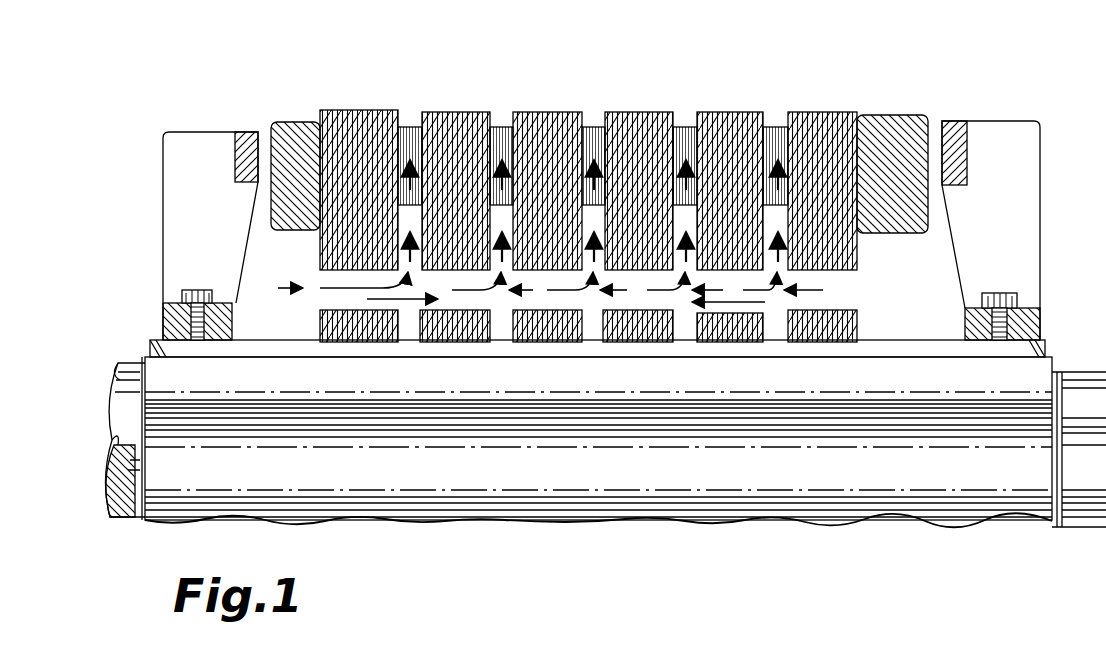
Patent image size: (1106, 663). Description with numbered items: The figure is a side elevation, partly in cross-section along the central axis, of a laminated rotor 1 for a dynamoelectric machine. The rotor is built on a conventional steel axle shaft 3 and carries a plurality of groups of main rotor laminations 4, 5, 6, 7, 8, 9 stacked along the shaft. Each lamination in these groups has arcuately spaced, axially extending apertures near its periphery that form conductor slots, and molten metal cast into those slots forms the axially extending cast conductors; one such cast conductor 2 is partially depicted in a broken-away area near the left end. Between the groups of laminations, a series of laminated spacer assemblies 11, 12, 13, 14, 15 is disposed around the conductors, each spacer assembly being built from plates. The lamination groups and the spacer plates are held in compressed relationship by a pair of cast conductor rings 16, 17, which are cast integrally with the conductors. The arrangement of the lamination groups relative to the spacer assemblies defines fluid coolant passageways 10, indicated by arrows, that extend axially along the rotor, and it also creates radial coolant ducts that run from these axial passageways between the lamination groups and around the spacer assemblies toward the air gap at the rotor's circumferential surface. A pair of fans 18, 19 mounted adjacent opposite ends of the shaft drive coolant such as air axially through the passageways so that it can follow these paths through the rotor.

The laminated rotor 1 is at (684, 100).
The cast conductor 2 is at (427, 163).
The axle shaft 3 is at (576, 488).
The group of rotor laminations 4 is at (365, 215).
The group of rotor laminations 5 is at (463, 219).
The group of rotor laminations 6 is at (552, 215).
The group of rotor laminations 7 is at (643, 215).
The group of rotor laminations 8 is at (733, 217).
The group of rotor laminations 9 is at (822, 213).
The fluid coolant passageways 10 is at (297, 287).
The laminated spacer assembly 11 is at (425, 164).
The laminated spacer assembly 12 is at (502, 120).
The laminated spacer assembly 13 is at (591, 120).
The laminated spacer assembly 14 is at (690, 125).
The laminated spacer assembly 15 is at (778, 125).
The cast conductor ring 16 is at (305, 189).
The cast conductor ring 17 is at (898, 191).
The fan 18 is at (212, 226).
The fan 19 is at (993, 236).